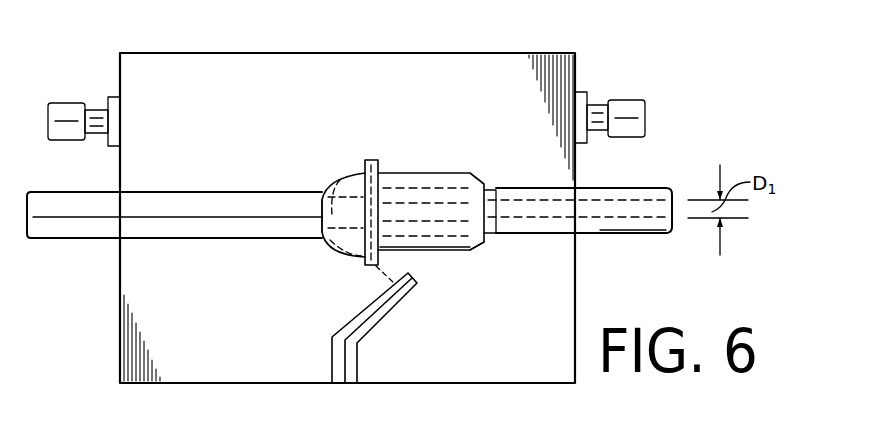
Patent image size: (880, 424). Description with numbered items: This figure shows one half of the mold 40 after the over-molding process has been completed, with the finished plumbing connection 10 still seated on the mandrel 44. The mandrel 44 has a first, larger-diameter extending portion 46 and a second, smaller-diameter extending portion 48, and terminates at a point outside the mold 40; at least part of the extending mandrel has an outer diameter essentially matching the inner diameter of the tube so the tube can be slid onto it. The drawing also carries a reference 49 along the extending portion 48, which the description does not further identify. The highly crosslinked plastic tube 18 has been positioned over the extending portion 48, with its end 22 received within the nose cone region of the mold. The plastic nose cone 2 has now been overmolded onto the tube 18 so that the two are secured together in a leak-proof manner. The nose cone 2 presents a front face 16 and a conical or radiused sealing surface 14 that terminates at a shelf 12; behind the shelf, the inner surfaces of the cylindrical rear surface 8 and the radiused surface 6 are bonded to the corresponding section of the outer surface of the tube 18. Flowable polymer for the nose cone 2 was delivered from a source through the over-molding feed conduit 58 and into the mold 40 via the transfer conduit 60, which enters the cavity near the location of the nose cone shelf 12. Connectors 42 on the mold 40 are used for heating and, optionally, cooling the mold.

The mold 40 is at (483, 48).
The connectors 42 is at (62, 102).
The mandrel 44 is at (185, 191).
The sealing surface 14 is at (357, 172).
The nose cone 2 is at (336, 260).
The front face 16 is at (322, 232).
The first extending portion 46 is at (340, 190).
The shelf 12 is at (367, 162).
The end 22 is at (377, 165).
The cylindrical rear surface 8 is at (440, 173).
The radiused surface 6 is at (486, 185).
The plumbing connection 10 is at (473, 257).
The second extending portion 48 is at (562, 190).
The rod bore 49 is at (598, 203).
The plastic tube 18 is at (640, 234).
The over-molding feed conduit 58 is at (379, 328).
The transfer conduit 60 is at (380, 280).